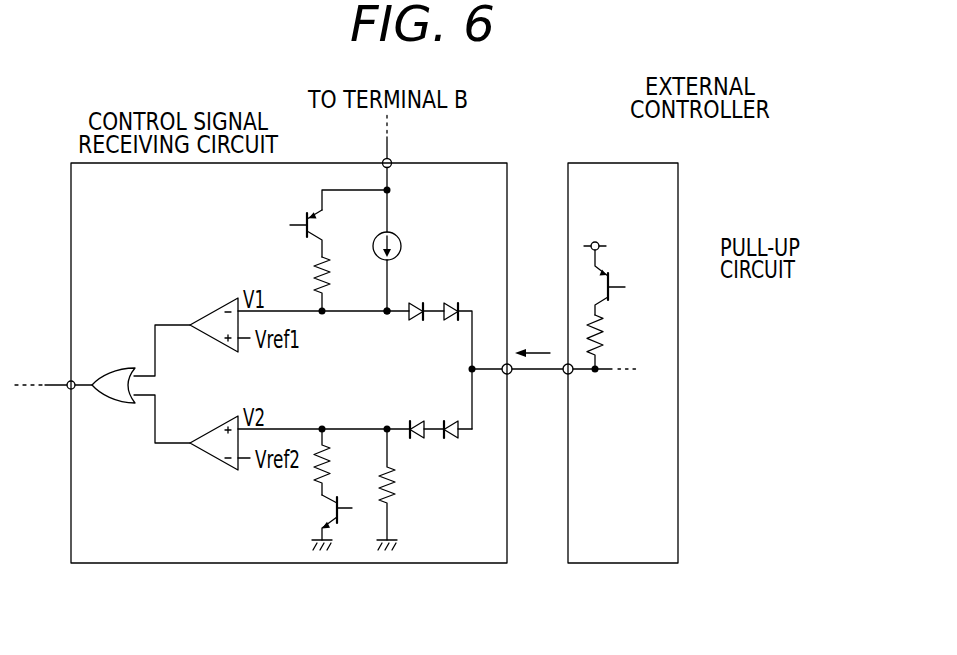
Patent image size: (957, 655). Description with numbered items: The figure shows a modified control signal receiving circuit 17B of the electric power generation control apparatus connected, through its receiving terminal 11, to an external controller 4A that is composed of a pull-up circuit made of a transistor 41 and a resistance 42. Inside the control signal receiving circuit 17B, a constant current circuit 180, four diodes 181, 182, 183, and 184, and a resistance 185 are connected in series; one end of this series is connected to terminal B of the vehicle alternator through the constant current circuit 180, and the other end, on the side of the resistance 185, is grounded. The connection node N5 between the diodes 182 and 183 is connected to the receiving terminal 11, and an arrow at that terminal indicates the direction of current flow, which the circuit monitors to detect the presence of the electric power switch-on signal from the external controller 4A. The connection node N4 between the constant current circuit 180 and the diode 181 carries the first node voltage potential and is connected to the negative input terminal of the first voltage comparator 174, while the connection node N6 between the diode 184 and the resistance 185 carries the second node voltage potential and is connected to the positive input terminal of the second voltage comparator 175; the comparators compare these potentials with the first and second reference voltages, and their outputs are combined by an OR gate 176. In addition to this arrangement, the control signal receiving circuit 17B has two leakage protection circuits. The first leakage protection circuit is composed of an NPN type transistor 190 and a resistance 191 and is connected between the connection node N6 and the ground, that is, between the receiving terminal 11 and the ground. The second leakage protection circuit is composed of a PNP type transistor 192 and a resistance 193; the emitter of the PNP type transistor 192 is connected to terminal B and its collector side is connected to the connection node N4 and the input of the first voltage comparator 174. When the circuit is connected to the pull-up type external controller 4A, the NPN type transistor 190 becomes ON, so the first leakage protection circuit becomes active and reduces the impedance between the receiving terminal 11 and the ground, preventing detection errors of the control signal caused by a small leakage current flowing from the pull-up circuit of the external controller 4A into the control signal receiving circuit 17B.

The control signal receiving circuit 17B is at (470, 163).
The external controller 4A is at (640, 163).
The receiving terminal 11 is at (508, 375).
The transistor 41 is at (610, 276).
The resistance 42 is at (603, 328).
The voltage comparator 174 is at (216, 306).
The voltage comparator 175 is at (216, 424).
The OR gate 176 is at (122, 368).
The constant current circuit 180 is at (400, 237).
The diode 181 is at (411, 303).
The diode 182 is at (446, 303).
The diode 183 is at (448, 421).
The diode 184 is at (410, 421).
The resistance 185 is at (394, 478).
The NPN type transistor 190 is at (320, 512).
The resistance 191 is at (328, 466).
The PNP type transistor 192 is at (306, 218).
The resistance 193 is at (318, 263).
The connection node N4 is at (388, 320).
The connection node N5 is at (457, 364).
The connection node N6 is at (381, 413).